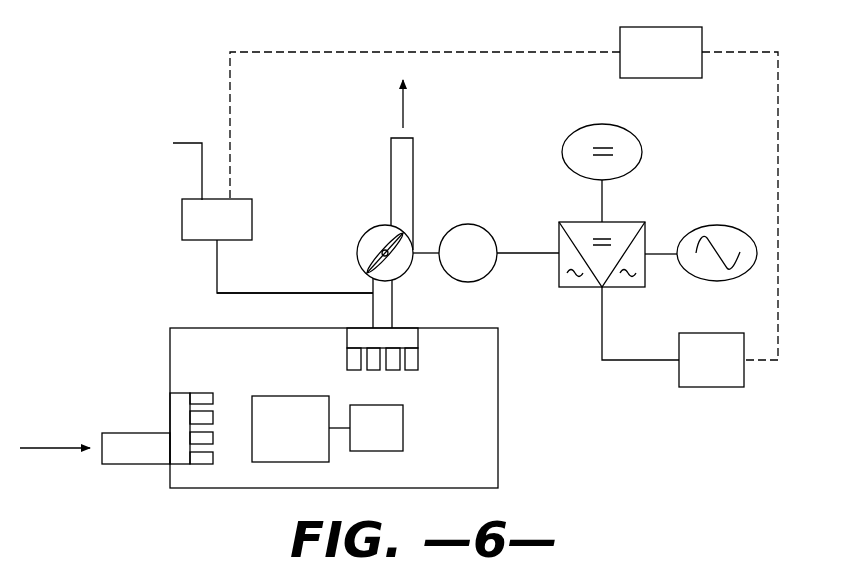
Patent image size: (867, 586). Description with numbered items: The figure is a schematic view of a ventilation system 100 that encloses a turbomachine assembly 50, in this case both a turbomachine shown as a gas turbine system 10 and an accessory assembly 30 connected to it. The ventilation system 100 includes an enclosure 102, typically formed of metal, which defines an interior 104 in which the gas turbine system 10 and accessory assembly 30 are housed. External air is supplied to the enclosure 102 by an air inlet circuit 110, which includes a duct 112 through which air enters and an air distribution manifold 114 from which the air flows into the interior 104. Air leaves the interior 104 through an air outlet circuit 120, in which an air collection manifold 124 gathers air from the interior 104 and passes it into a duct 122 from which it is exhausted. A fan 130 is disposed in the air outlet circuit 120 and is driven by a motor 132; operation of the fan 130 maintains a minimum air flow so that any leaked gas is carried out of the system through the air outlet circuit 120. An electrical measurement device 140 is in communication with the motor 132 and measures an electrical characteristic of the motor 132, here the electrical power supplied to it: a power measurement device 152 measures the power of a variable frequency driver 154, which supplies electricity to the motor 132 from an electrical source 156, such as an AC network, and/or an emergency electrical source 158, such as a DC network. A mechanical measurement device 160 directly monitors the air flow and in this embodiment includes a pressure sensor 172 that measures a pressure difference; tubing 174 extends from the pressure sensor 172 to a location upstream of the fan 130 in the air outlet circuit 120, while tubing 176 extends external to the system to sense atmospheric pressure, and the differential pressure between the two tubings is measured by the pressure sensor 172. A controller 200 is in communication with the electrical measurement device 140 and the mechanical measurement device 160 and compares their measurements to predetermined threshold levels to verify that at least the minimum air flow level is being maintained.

The ventilation system 100 is at (188, 86).
The controller 200 is at (641, 64).
The tubing 176 is at (197, 180).
The pressure sensor 172 is at (182, 220).
The mechanical measurement device 160 is at (262, 208).
The tubing 174 is at (318, 292).
The air outlet circuit 120 is at (397, 293).
The fan 130 is at (357, 252).
The duct 122 is at (390, 166).
The motor 132 is at (456, 225).
The electrical measurement device 140 is at (636, 261).
The variable frequency driver 154 is at (559, 242).
The emergency electrical source 158 is at (563, 152).
The electrical source 156 is at (713, 222).
The power measurement device 152 is at (690, 389).
The enclosure 102 is at (498, 436).
The interior 104 is at (232, 369).
The air collection manifold 124 is at (422, 338).
The air inlet circuit 110 is at (106, 412).
The duct 112 is at (128, 447).
The air distribution manifold 114 is at (178, 405).
The gas turbine system 10 is at (276, 441).
The accessory assembly 30 is at (363, 442).
The turbomachine assembly 50 is at (427, 425).